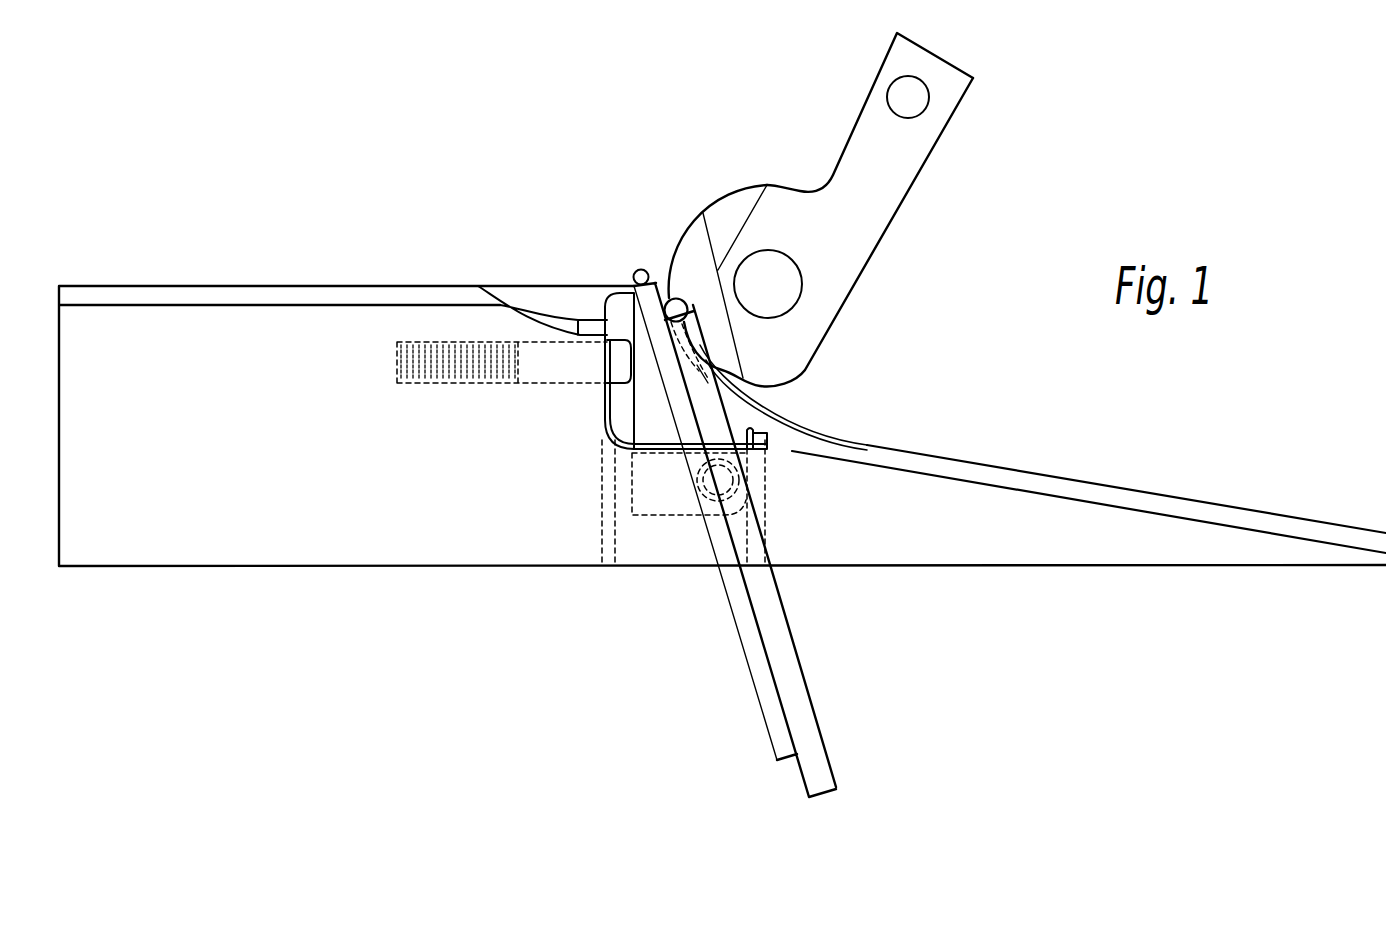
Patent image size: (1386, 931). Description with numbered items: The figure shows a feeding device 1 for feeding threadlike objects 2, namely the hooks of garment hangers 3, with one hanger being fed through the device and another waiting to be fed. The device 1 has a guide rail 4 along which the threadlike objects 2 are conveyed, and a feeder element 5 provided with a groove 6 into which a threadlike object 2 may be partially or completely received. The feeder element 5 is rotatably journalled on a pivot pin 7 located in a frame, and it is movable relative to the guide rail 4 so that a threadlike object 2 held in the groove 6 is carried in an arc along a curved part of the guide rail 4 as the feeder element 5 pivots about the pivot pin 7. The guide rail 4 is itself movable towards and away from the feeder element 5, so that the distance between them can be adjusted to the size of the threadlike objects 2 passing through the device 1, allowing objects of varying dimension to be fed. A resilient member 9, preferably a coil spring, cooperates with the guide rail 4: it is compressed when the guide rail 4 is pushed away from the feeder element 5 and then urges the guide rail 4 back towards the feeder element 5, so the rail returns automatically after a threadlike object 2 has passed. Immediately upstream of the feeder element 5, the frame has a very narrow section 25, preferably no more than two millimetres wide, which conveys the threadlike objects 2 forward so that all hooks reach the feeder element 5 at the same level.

The device 1 is at (664, 248).
The threadlike object 2 is at (638, 267).
The garment hanger 3 is at (758, 664).
The guide rail 4 is at (732, 408).
The feeder element 5 is at (893, 168).
The groove 6 is at (689, 304).
The pivot pin 7 is at (800, 265).
The resilient member 9 is at (443, 385).
The section 25 is at (553, 283).